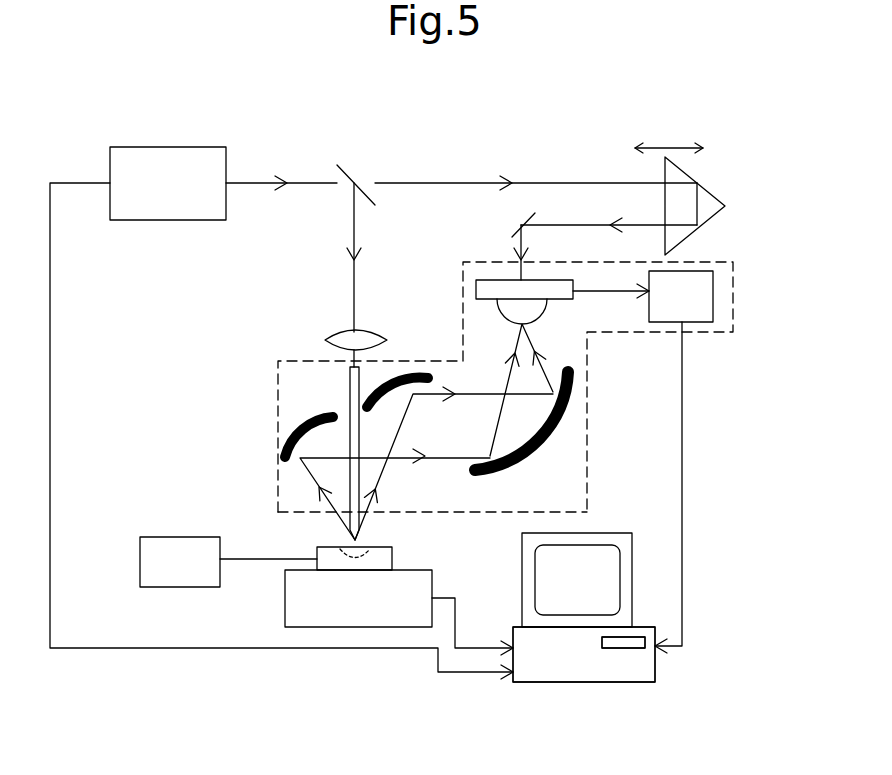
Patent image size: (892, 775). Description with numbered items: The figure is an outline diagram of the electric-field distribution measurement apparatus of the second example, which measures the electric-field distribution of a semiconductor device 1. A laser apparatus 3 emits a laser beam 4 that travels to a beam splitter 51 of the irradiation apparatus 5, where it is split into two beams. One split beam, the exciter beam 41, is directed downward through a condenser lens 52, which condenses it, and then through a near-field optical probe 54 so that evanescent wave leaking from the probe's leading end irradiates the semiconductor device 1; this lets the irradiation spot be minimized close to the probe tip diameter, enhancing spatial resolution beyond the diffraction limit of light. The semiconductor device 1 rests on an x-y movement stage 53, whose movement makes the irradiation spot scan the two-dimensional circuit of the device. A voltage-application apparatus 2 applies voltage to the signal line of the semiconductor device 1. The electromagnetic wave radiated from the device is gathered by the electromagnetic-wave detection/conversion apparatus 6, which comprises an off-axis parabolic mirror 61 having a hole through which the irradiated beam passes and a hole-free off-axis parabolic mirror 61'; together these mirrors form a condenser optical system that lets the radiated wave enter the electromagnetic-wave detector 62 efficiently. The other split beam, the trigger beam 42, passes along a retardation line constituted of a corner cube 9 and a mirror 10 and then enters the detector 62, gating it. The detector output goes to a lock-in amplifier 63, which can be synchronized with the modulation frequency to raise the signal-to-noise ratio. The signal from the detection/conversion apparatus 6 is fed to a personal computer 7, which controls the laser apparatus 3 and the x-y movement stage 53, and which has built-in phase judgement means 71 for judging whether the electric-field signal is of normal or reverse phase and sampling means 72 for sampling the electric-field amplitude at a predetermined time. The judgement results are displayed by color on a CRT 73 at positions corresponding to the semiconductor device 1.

The semiconductor device 1 is at (392, 557).
The voltage-application apparatus 2 is at (170, 577).
The laser apparatus 3 is at (135, 165).
The laser beam 4 is at (300, 187).
The irradiation apparatus 5 is at (243, 414).
The electromagnetic-wave detection/conversion apparatus 6 is at (630, 462).
The personal computer 7 is at (649, 637).
The corner cube 9 is at (690, 172).
The mirror 10 is at (513, 237).
The exciter beam 41 is at (354, 204).
The trigger beam 42 is at (432, 183).
The beam splitter 51 is at (340, 167).
The condenser lens 52 is at (327, 338).
The x-y movement stage 53 is at (327, 615).
The near-field optical probe 54 is at (357, 468).
The off-axis parabolic mirror 61 is at (320, 427).
The off-axis parabolic mirror 61' is at (617, 411).
The electromagnetic-wave detector 62 is at (508, 308).
The lock-in amplifier 63 is at (703, 302).
The phase judgement means 71 is at (637, 670).
The sampling means 72 is at (557, 695).
The CRT 73 is at (602, 575).